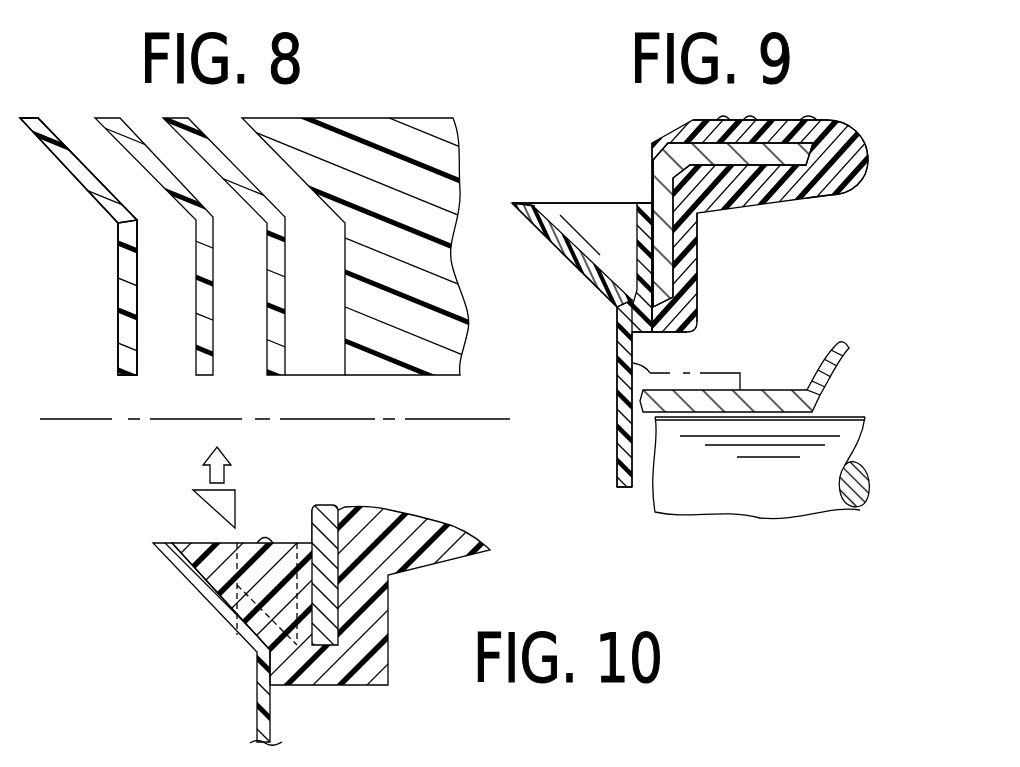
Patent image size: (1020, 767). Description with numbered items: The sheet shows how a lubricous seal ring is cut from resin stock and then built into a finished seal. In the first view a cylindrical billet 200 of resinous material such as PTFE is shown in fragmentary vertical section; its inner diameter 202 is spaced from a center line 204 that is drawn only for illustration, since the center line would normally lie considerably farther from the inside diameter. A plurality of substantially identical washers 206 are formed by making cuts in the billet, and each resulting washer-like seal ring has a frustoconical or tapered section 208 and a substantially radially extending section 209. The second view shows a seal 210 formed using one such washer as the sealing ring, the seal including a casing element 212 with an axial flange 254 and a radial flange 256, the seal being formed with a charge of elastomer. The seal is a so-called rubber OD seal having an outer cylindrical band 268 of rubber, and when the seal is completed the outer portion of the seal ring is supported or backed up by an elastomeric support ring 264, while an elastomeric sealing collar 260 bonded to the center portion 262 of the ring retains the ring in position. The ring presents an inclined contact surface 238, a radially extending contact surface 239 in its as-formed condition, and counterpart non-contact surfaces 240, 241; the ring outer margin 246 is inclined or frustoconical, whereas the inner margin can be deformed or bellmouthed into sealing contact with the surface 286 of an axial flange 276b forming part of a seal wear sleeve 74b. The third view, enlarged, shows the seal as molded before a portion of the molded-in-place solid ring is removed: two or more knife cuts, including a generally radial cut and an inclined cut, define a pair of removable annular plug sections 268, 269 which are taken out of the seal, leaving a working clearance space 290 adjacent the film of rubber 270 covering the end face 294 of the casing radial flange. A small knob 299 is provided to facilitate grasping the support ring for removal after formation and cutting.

In FIG. 8, the billet 200 is at (465, 150).
In FIG. 8, the inner diameter 202 is at (432, 357).
In FIG. 8, the center line 204 is at (350, 420).
In FIG. 8, the washer 206 is at (105, 224).
In FIG. 9, the washer 206 is at (595, 315).
In FIG. 8, the frustoconical section 208 is at (70, 158).
In FIG. 9, the frustoconical section 208 is at (560, 243).
In FIG. 8, the radially extending section 209 is at (130, 350).
In FIG. 9, the seal 210 is at (612, 147).
In FIG. 9, the casing element 212 is at (638, 153).
In FIG. 9, the inclined contact surface 238 is at (592, 292).
In FIG. 9, the radially extending contact surface 239 is at (617, 408).
In FIG. 9, the non-contact surface 240 is at (578, 243).
In FIG. 9, the non-contact surface 241 is at (633, 447).
In FIG. 9, the ring outer margin 246 is at (532, 213).
In FIG. 9, the axial flange 254 is at (808, 197).
In FIG. 9, the radial flange 256 is at (667, 222).
In FIG. 9, the elastomeric sealing collar 260 is at (670, 322).
In FIG. 9, the center portion 262 is at (617, 313).
In FIG. 9, the elastomeric support ring 264 is at (560, 202).
In FIG. 9, the outer cylindrical band 268 is at (777, 128).
In FIG. 10, the outer cylindrical band 268 is at (214, 503).
In FIG. 10, the removable annular plug section 269 is at (294, 566).
In FIG. 9, the film of rubber 270 is at (641, 262).
In FIG. 9, the axial flange 276b is at (790, 402).
In FIG. 9, the surface 286 is at (770, 390).
In FIG. 9, the working clearance space 290 is at (625, 238).
In FIG. 9, the end face 294 is at (648, 238).
In FIG. 10, the knob 299 is at (257, 530).
In FIG. 9, the seal wear sleeve 74b is at (667, 402).